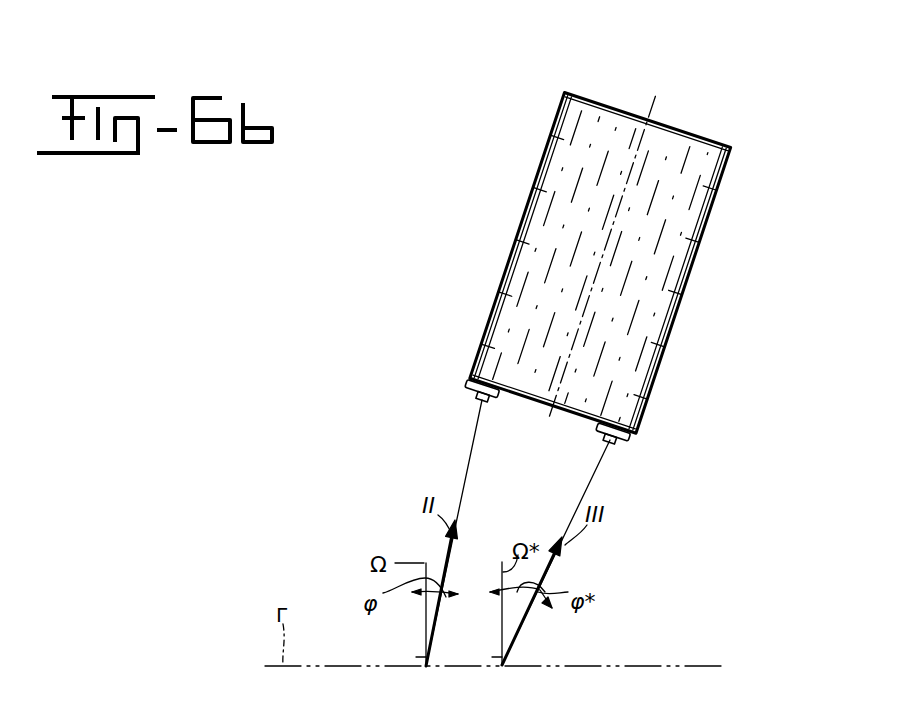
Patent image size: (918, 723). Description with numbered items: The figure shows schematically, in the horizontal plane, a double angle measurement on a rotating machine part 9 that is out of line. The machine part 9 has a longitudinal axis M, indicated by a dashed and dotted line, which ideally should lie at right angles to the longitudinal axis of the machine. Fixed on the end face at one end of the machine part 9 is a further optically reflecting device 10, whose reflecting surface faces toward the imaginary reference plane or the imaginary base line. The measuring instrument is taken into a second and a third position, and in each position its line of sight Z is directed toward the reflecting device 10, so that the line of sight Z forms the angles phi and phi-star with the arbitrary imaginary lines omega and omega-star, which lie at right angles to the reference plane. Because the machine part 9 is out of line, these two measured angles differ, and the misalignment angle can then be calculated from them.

The machine part 9 is at (543, 212).
The further optically reflecting device 10 is at (470, 391).
The longitudinal axis M is at (645, 93).
The line of sight Z is at (468, 470).